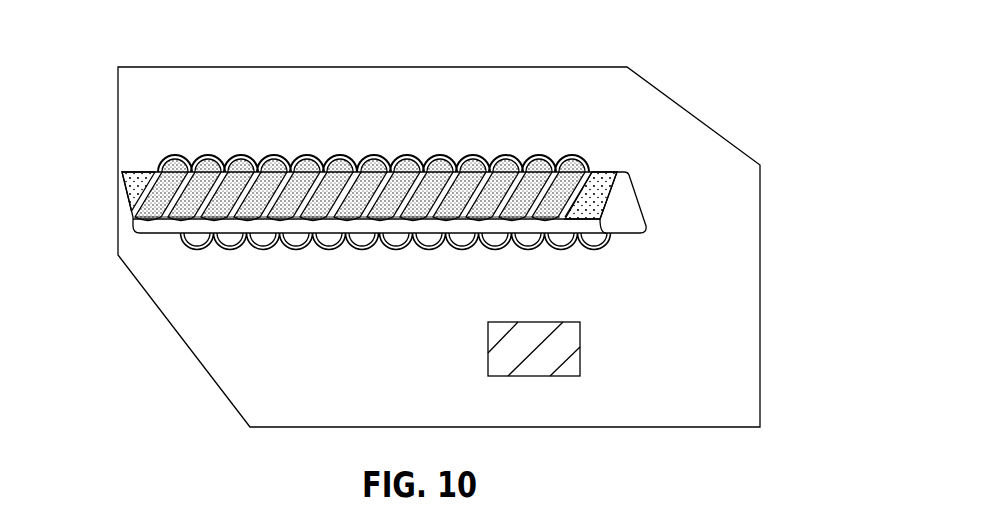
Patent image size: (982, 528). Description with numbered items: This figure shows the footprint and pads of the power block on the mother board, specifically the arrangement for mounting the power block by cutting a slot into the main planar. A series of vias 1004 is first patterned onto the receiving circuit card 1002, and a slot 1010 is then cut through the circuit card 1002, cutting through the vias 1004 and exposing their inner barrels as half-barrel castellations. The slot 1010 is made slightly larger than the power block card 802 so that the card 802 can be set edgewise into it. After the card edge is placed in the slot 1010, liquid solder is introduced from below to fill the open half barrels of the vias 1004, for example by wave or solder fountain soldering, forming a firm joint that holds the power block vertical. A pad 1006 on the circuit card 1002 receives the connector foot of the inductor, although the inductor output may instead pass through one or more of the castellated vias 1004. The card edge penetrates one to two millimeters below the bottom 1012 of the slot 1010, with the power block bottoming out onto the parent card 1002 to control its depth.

The power block card 802 is at (330, 357).
The receiving circuit card 1002 is at (632, 209).
The vias 1004 is at (466, 156).
The pad 1006 is at (572, 343).
The slot 1010 is at (505, 224).
The bottom of the slot 1012 is at (295, 220).